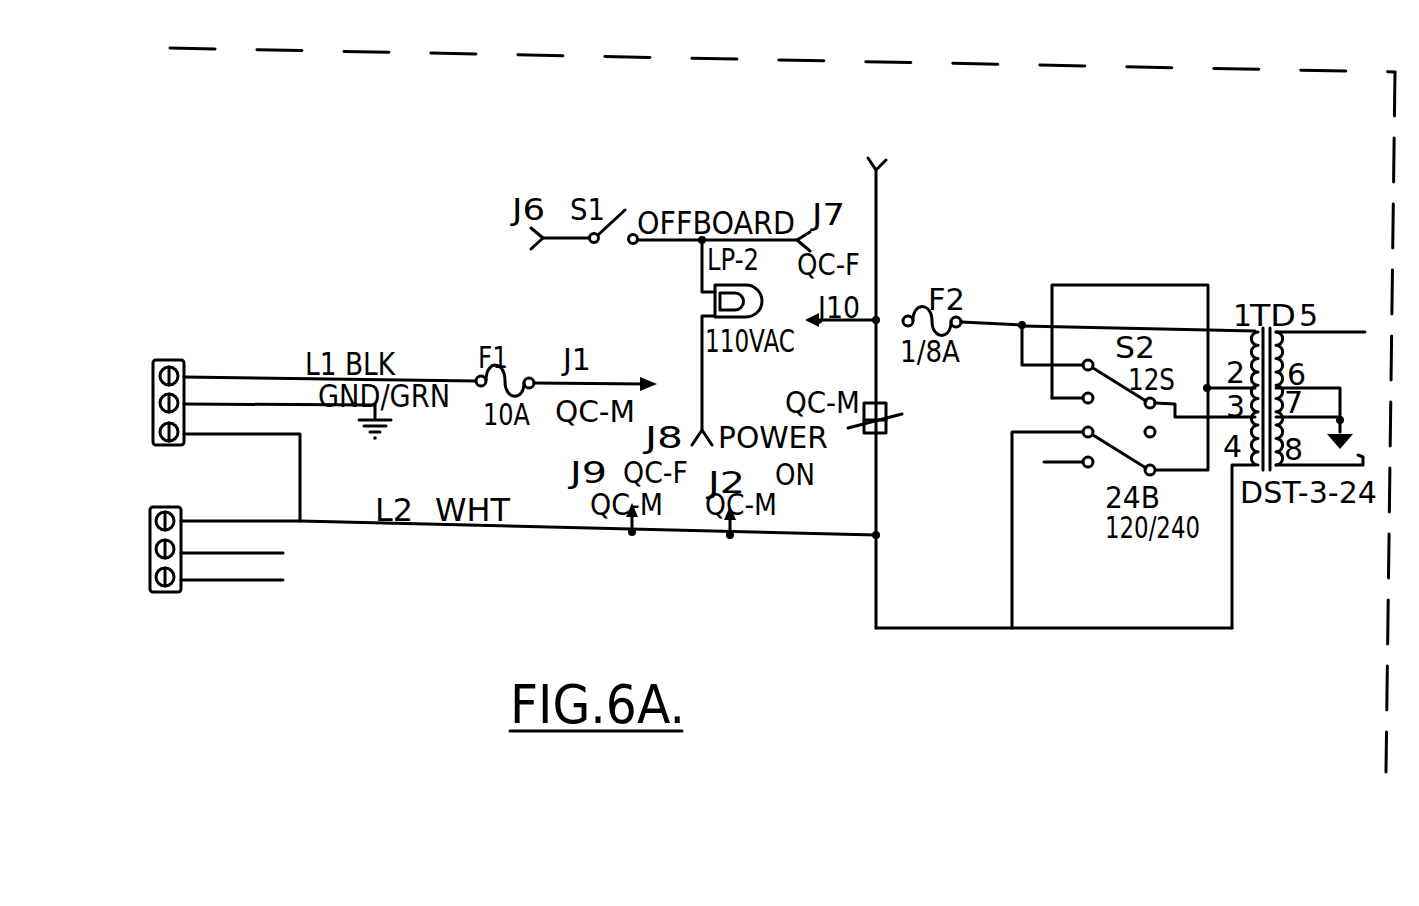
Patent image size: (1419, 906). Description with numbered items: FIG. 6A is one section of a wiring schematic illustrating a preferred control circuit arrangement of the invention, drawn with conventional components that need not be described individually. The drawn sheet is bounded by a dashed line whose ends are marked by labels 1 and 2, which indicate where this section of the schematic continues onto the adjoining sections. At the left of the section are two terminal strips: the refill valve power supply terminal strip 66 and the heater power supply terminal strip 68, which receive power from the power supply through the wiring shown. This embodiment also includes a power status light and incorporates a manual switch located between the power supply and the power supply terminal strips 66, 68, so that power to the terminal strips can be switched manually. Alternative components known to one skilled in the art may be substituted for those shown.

The boundary zone line 1 is at (774, 82).
The boundary zone line 2 is at (1367, 445).
The refill valve power supply terminal strip 66 is at (183, 358).
The heater power supply terminal strip 68 is at (170, 593).